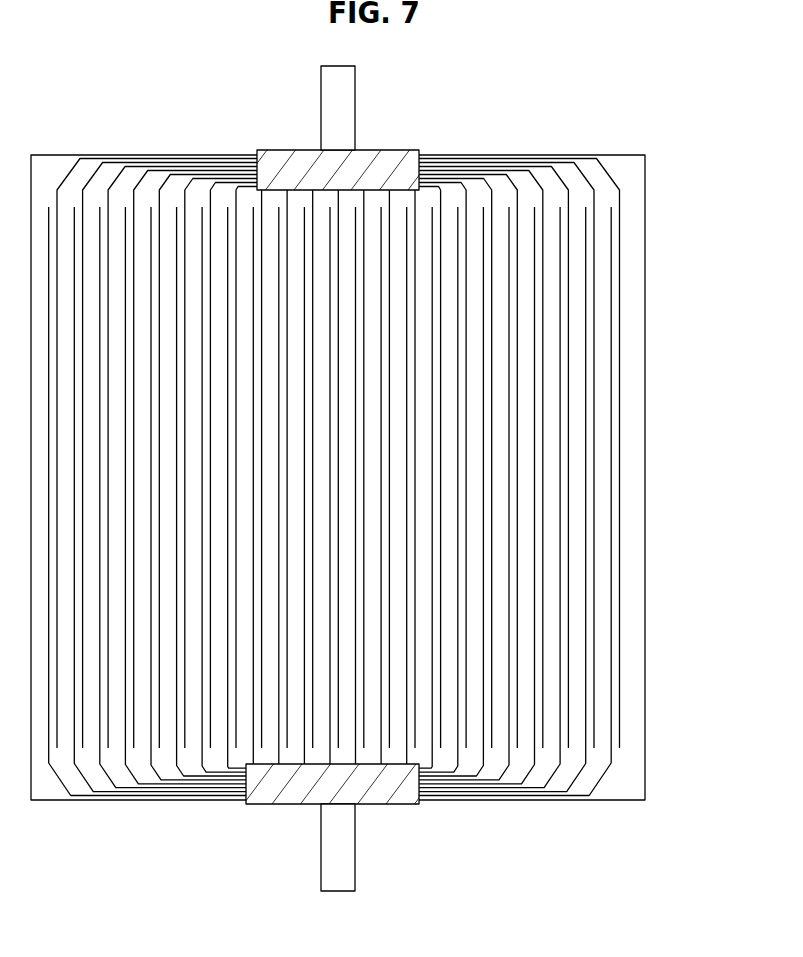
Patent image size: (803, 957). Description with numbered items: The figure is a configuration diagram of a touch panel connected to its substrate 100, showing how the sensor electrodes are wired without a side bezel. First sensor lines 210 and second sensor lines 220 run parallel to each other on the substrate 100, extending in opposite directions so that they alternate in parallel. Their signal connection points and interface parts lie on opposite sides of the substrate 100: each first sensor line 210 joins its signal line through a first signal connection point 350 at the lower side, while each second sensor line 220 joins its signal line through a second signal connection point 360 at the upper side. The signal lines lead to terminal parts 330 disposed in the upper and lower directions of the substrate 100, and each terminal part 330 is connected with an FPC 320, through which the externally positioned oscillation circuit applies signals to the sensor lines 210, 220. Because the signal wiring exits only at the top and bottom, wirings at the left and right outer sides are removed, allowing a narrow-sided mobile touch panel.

The substrate 100 is at (645, 449).
The first sensor lines 210 is at (382, 517).
The second sensor lines 220 is at (387, 436).
The FPC 320 is at (332, 112).
The terminal part 330 is at (382, 168).
The first signal connection point 350 is at (610, 765).
The second signal connection point 360 is at (618, 190).